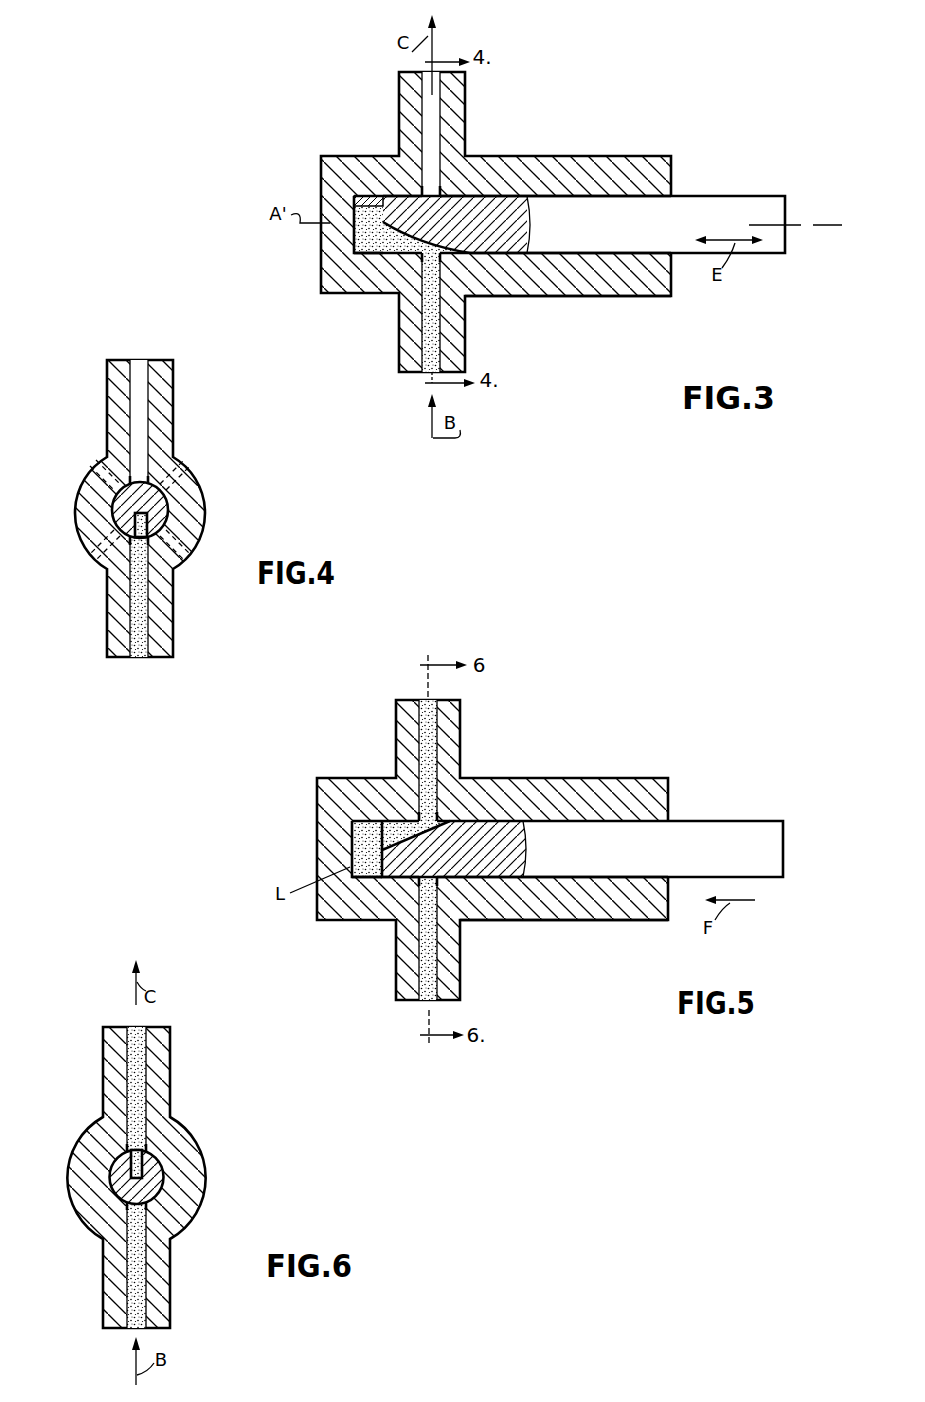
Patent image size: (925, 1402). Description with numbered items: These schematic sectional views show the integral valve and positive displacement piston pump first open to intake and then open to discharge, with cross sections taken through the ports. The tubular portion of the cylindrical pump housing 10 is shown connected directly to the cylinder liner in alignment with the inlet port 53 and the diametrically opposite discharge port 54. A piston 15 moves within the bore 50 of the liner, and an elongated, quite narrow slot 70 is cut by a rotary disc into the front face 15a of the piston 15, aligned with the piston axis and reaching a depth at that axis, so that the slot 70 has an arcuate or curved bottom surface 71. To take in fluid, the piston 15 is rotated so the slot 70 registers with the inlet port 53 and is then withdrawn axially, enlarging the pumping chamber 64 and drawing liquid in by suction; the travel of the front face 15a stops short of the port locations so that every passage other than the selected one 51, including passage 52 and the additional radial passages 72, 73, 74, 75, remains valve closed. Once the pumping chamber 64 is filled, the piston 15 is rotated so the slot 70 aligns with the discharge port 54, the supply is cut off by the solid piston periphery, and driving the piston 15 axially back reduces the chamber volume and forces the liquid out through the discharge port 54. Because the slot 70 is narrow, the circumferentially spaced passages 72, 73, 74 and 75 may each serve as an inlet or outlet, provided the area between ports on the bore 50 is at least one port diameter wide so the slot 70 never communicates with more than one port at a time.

In FIG. 3, the cylindrical pump housing 10 is at (625, 298).
In FIG. 5, the cylindrical pump housing 10 is at (577, 922).
In FIG. 3, the piston 15 is at (700, 208).
In FIG. 4, the piston 15 is at (120, 507).
In FIG. 5, the piston 15 is at (722, 840).
In FIG. 6, the piston 15 is at (166, 1176).
In FIG. 3, the front face of the piston 15a is at (357, 203).
In FIG. 5, the front face of the piston 15a is at (378, 835).
In FIG. 3, the bore 50 is at (617, 196).
In FIG. 4, the bore 50 is at (140, 508).
In FIG. 5, the bore 50 is at (664, 778).
In FIG. 6, the bore 50 is at (136, 1177).
In FIG. 3, the passage 51 is at (433, 330).
In FIG. 4, the passage 51 is at (137, 625).
In FIG. 5, the passage 51 is at (432, 980).
In FIG. 6, the passage 51 is at (136, 1308).
In FIG. 3, the passage 52 is at (430, 146).
In FIG. 4, the passage 52 is at (140, 427).
In FIG. 5, the passage 52 is at (430, 757).
In FIG. 6, the passage 52 is at (136, 1111).
In FIG. 3, the inlet port 53 is at (427, 265).
In FIG. 4, the inlet port 53 is at (135, 552).
In FIG. 5, the inlet port 53 is at (420, 893).
In FIG. 6, the inlet port 53 is at (135, 1222).
In FIG. 3, the discharge port 54 is at (420, 188).
In FIG. 4, the discharge port 54 is at (143, 480).
In FIG. 5, the discharge port 54 is at (427, 812).
In FIG. 6, the discharge port 54 is at (126, 1138).
In FIG. 3, the pumping chamber 64 is at (350, 257).
In FIG. 5, the pumping chamber 64 is at (370, 876).
In FIG. 3, the slot 70 is at (540, 222).
In FIG. 4, the slot 70 is at (142, 513).
In FIG. 5, the slot 70 is at (442, 835).
In FIG. 6, the slot 70 is at (131, 1163).
In FIG. 3, the curved bottom surface 71 is at (457, 257).
In FIG. 5, the curved bottom surface 71 is at (422, 845).
In FIG. 4, the radial passage 72 is at (193, 476).
In FIG. 4, the radial passage 73 is at (184, 566).
In FIG. 4, the radial passage 74 is at (90, 560).
In FIG. 4, the radial passage 75 is at (86, 467).